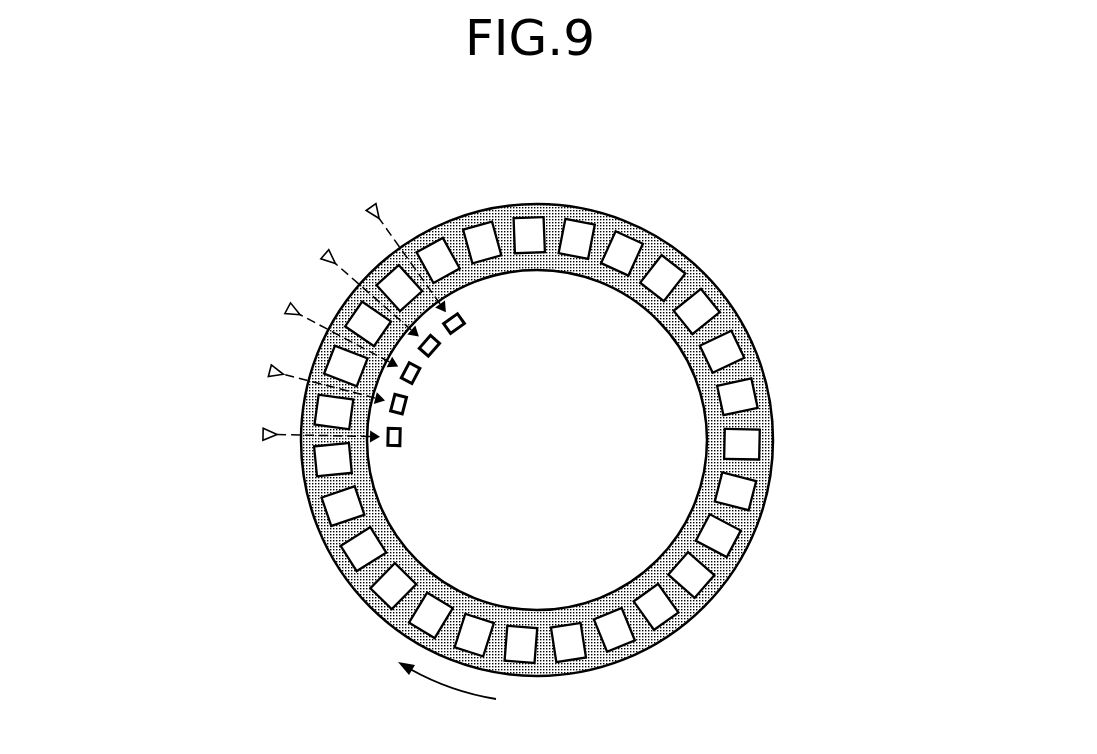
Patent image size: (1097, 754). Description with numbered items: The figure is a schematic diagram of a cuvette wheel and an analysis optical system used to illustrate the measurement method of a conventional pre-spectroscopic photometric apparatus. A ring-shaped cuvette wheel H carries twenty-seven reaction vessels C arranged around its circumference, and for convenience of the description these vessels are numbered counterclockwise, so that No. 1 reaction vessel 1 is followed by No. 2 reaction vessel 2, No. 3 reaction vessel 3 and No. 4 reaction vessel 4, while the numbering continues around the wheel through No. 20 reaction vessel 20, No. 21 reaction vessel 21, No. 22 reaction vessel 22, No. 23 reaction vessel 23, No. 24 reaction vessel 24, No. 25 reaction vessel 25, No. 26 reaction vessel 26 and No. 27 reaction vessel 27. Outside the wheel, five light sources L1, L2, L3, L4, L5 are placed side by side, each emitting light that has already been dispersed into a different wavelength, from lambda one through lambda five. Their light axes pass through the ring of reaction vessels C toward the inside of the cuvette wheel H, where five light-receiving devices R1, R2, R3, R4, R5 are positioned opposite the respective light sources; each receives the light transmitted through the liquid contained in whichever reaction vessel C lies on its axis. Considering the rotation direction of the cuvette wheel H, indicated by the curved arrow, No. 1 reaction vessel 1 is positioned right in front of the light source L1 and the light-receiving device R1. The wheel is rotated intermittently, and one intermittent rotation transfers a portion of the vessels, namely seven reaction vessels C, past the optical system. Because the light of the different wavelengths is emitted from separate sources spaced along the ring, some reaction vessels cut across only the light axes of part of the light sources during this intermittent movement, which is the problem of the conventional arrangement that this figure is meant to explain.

The cuvette wheel H is at (572, 198).
The reaction vessel C is at (523, 228).
The No. 1 reaction vessel 1 is at (333, 459).
The No. 2 reaction vessel 2 is at (343, 506).
The No. 3 reaction vessel 3 is at (364, 549).
The No. 4 reaction vessel 4 is at (393, 586).
The No. 20 reaction vessel 20 is at (577, 239).
The No. 21 reaction vessel 21 is at (529, 235).
The No. 22 reaction vessel 22 is at (482, 243).
The No. 23 reaction vessel 23 is at (438, 260).
The No. 24 reaction vessel 24 is at (400, 288).
The No. 25 reaction vessel 25 is at (368, 324).
The No. 26 reaction vessel 26 is at (345, 366).
The No. 27 reaction vessel 27 is at (334, 412).
The light source L1 is at (262, 436).
The light source L2 is at (270, 372).
The light source L3 is at (288, 310).
The light source L4 is at (326, 256).
The light source L5 is at (373, 210).
The light-receiving device R1 is at (402, 438).
The light-receiving device R2 is at (406, 407).
The light-receiving device R3 is at (419, 380).
The light-receiving device R4 is at (437, 352).
The light-receiving device R5 is at (459, 327).